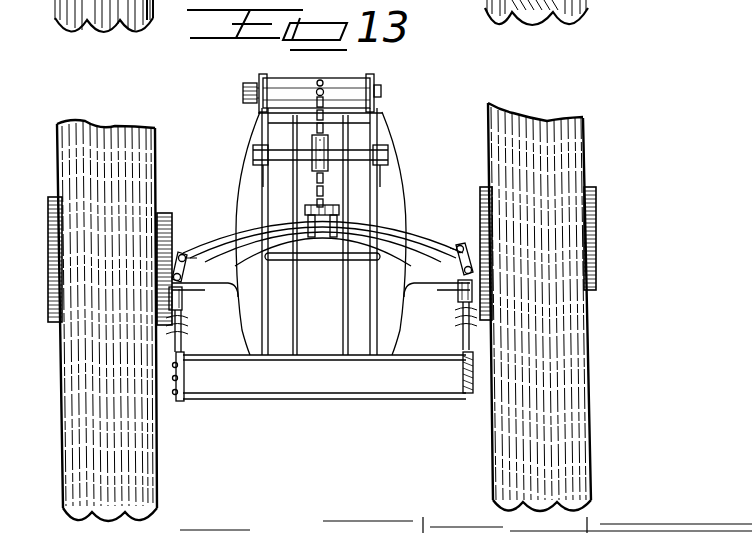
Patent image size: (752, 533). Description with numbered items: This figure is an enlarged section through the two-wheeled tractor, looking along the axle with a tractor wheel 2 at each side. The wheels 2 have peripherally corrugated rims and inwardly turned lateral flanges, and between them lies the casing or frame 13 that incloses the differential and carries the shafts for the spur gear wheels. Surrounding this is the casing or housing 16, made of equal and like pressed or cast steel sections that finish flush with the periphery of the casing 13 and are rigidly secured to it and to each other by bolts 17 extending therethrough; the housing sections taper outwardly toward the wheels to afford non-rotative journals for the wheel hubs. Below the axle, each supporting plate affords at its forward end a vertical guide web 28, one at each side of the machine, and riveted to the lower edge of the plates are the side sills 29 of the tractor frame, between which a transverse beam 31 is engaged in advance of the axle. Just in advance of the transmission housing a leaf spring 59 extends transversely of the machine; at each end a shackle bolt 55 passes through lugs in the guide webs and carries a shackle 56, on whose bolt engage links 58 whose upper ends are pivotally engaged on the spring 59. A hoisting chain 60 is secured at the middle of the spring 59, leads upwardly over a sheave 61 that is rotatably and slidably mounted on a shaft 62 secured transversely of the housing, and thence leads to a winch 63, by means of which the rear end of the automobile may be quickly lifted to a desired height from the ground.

The wheels 2 is at (72, 160).
The casing or frame 13 is at (330, 333).
The casing or housing 16 is at (255, 303).
The bolts 17 is at (378, 236).
The vertical guide web 28 is at (468, 342).
The side sills 29 is at (184, 380).
The transverse beam 31 is at (363, 367).
The shackle bolt 55 is at (190, 294).
The shackle 56 is at (478, 298).
The links 58 is at (182, 254).
The leaf spring 59 is at (243, 213).
The hoisting chain 60 is at (327, 190).
The sheave 61 is at (327, 140).
The shaft 62 is at (362, 152).
The winch 63 is at (292, 92).